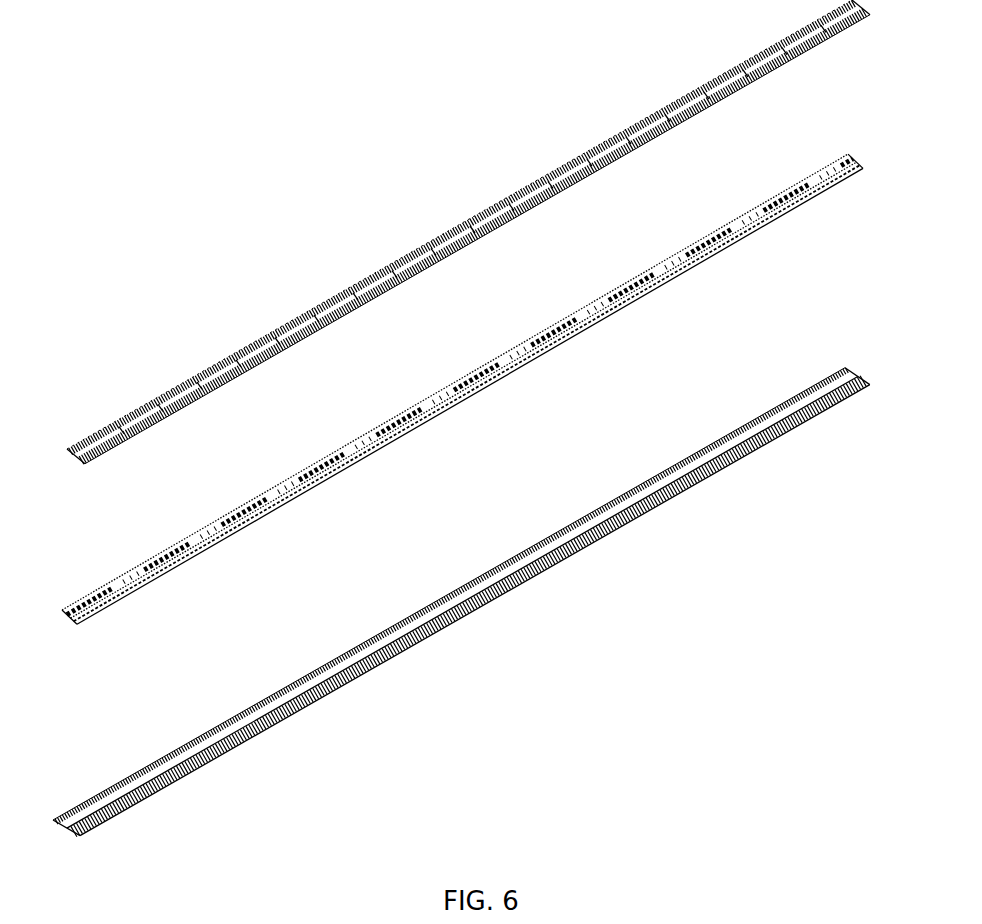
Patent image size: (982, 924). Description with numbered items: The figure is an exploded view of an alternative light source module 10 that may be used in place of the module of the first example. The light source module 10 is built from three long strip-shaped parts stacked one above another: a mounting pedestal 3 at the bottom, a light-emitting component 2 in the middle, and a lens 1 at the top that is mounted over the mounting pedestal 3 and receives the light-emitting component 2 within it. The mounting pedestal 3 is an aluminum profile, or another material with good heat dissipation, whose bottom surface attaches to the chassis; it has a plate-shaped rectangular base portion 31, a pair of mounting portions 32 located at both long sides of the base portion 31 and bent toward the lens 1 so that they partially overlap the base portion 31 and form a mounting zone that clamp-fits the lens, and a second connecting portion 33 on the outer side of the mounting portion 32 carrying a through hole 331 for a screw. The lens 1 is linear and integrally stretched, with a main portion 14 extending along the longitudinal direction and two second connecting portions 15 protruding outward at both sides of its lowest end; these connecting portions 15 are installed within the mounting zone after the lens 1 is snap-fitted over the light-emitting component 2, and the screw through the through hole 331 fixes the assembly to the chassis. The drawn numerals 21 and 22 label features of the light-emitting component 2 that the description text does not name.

The light source module 10 is at (273, 190).
The lens 1 is at (565, 162).
The main portion 14 is at (502, 222).
The second connecting portion 15 is at (425, 268).
The light-emitting component 2 is at (540, 347).
The light emitting elements 21 is at (370, 462).
The board conductive traces 22 is at (417, 430).
The mounting pedestal 3 is at (748, 452).
The base portion 31 is at (623, 505).
The mounting portion 32 is at (703, 480).
The second connecting portion 33 is at (590, 537).
The through hole 331 is at (592, 548).